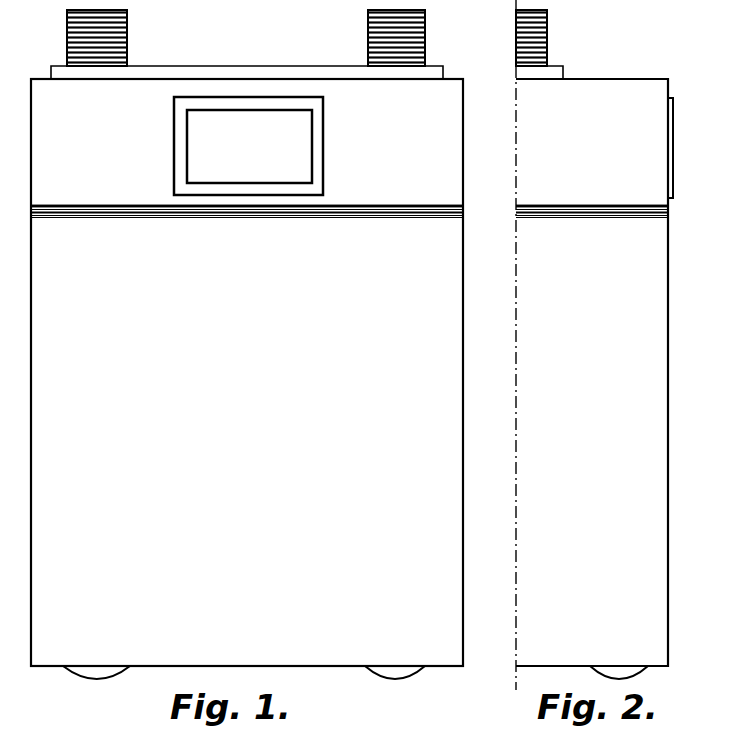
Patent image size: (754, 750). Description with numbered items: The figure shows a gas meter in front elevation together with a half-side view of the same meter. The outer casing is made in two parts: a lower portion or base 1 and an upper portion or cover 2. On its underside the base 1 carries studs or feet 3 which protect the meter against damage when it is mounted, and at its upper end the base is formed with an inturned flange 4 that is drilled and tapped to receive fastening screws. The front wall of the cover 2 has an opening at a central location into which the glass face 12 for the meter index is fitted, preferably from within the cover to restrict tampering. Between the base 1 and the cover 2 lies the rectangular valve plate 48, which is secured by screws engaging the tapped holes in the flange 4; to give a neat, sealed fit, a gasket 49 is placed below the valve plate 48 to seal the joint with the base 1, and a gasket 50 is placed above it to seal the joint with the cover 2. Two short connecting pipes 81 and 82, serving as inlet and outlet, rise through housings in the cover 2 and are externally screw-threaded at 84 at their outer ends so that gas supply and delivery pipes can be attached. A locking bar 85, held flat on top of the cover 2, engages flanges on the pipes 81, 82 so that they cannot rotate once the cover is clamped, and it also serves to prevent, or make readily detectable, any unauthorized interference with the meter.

In FIG. 1, the base 1 is at (247, 372).
In FIG. 2, the base 1 is at (592, 372).
In FIG. 1, the cover 2 is at (247, 148).
In FIG. 2, the cover 2 is at (592, 176).
In FIG. 1, the studs or feet 3 is at (97, 665).
In FIG. 2, the studs or feet 3 is at (620, 665).
In FIG. 1, the flange 4 is at (15, 148).
In FIG. 1, the glass face 12 is at (248, 146).
In FIG. 2, the glass face 12 is at (673, 148).
In FIG. 1, the valve plate 48 is at (522, 213).
In FIG. 1, the gasket 49 is at (447, 218).
In FIG. 2, the gasket 50 is at (535, 206).
In FIG. 1, the connecting pipe 81 is at (127, 22).
In FIG. 2, the connecting pipe 81 is at (547, 39).
In FIG. 1, the connecting pipe 82 is at (368, 30).
In FIG. 1, the external screw thread 84 is at (425, 37).
In FIG. 1, the locking bar 85 is at (248, 70).
In FIG. 2, the locking bar 85 is at (563, 72).